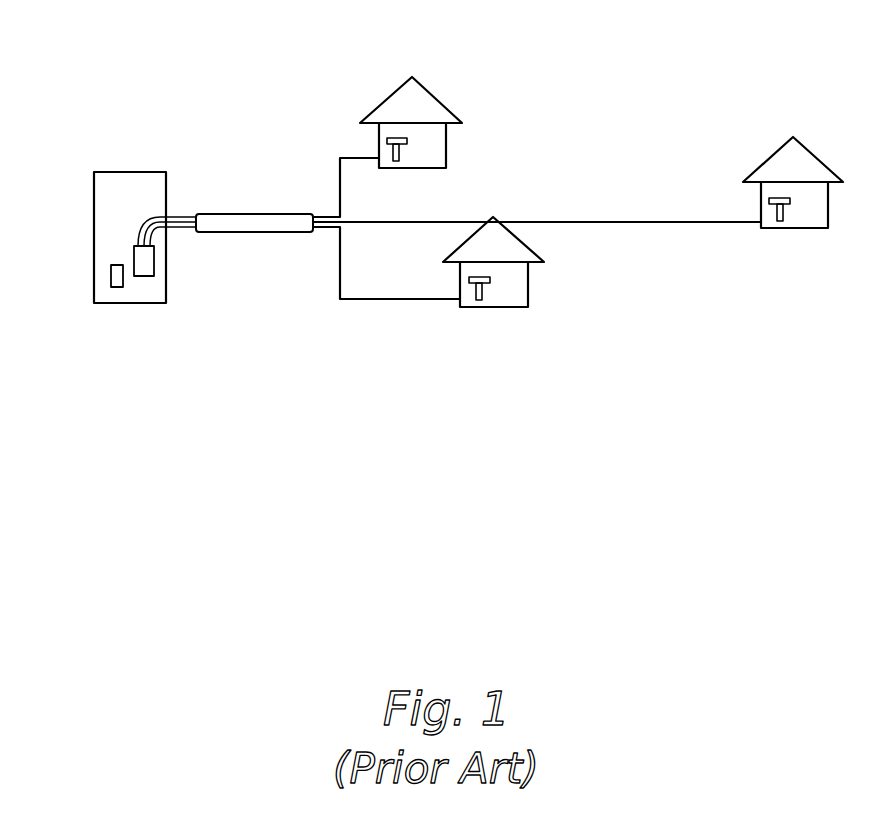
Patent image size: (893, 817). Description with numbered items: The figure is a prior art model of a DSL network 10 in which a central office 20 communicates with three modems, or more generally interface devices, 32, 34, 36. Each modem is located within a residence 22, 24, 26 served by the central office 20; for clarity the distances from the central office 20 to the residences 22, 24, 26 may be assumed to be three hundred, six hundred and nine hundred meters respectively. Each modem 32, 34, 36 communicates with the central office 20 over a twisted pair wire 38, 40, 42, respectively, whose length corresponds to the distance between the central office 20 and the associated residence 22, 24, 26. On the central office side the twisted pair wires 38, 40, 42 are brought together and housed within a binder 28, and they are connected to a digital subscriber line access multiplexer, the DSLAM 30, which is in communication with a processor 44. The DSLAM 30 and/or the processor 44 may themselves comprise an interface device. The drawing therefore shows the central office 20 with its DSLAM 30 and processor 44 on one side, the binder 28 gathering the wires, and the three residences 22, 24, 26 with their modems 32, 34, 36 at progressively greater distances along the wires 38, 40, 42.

The DSL network 10 is at (262, 116).
The central office 20 is at (94, 200).
The residence 22 is at (446, 140).
The residence 24 is at (528, 275).
The residence 26 is at (768, 160).
The binder 28 is at (275, 233).
The digital subscriber line access multiplexer (DSLAM) 30 is at (145, 278).
The modem 32 is at (398, 152).
The modem 34 is at (484, 300).
The modem 36 is at (787, 219).
The twisted pair wire 38 is at (340, 194).
The twisted pair wire 40 is at (405, 300).
The twisted pair wire 42 is at (598, 222).
The processor 44 is at (111, 280).